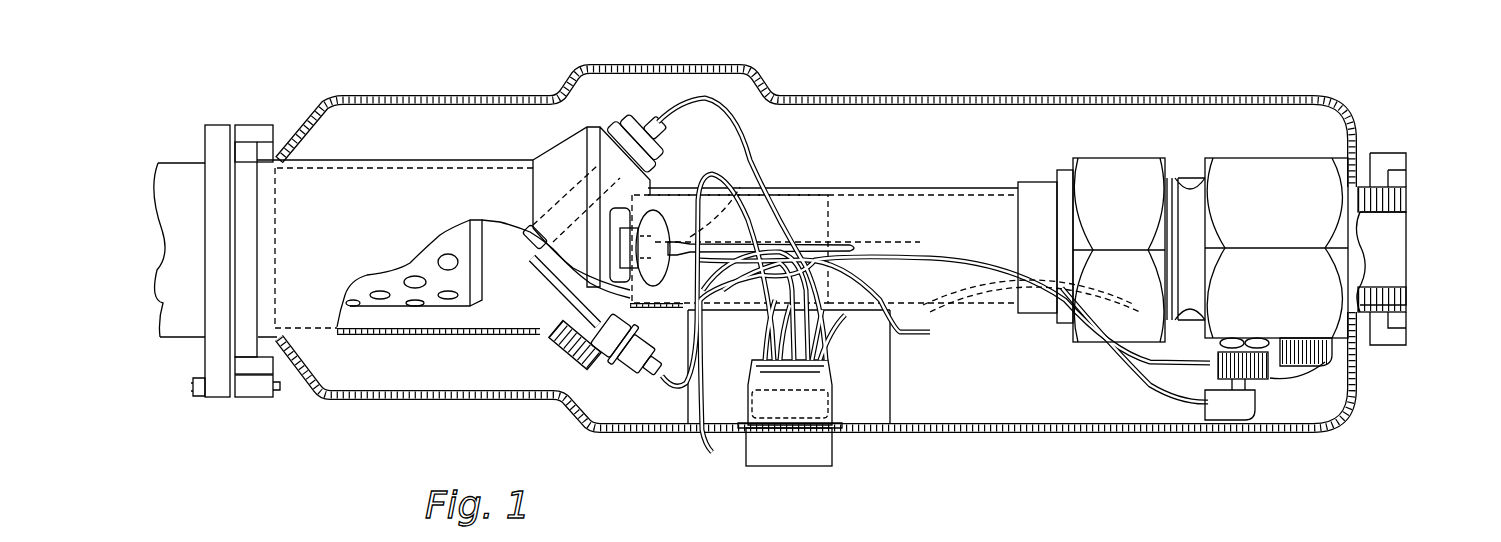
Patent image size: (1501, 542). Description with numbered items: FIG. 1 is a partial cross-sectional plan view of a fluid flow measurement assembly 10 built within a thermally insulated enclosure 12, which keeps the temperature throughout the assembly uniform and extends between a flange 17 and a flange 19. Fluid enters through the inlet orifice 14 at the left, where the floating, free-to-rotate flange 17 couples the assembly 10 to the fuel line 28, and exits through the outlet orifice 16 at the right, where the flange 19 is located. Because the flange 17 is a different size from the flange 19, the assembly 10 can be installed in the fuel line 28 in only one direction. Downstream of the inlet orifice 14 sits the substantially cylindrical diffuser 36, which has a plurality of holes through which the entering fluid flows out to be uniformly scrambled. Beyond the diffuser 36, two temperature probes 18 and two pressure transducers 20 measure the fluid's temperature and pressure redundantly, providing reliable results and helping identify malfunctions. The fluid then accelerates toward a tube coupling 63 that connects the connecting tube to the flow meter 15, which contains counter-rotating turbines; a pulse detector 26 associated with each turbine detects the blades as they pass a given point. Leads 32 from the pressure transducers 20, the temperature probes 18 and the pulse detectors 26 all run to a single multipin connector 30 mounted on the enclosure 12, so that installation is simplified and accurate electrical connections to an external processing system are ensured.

The fluid flow measurement assembly 10 is at (385, 50).
The thermally insulated enclosure 12 is at (1318, 94).
The inlet orifice 14 is at (232, 291).
The flow meter 15 is at (1312, 312).
The outlet orifice 16 is at (1395, 232).
The flange 17 is at (262, 125).
The temperature probe 18 is at (537, 225).
The flange 19 is at (1392, 340).
The pressure transducer 20 is at (661, 240).
The pulse detector 26 is at (1332, 392).
The fuel line 28 is at (180, 322).
The multipin connector 30 is at (820, 455).
The leads 32 is at (700, 100).
The diffuser 36 is at (436, 298).
The tube coupling 63 is at (1105, 172).